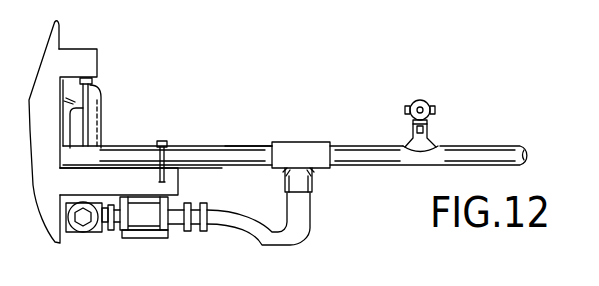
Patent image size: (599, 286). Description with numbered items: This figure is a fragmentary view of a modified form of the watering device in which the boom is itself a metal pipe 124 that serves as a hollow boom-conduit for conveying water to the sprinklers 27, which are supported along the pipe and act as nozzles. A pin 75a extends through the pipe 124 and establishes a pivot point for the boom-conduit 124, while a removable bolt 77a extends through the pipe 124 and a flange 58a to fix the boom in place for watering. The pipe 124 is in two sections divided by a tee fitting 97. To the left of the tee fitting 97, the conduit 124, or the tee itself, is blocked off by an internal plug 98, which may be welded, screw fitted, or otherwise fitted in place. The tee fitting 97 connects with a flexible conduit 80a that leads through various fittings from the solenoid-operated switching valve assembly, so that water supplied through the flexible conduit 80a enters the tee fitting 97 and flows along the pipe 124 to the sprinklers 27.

The sprinkler 27 is at (428, 124).
The flange 58a is at (178, 181).
The pin 75a is at (84, 121).
The removable bolt 77a is at (166, 139).
The flexible conduit 80a is at (308, 225).
The tee fitting 97 is at (309, 152).
The internal plug 98 is at (255, 144).
The pipe 124 is at (485, 152).